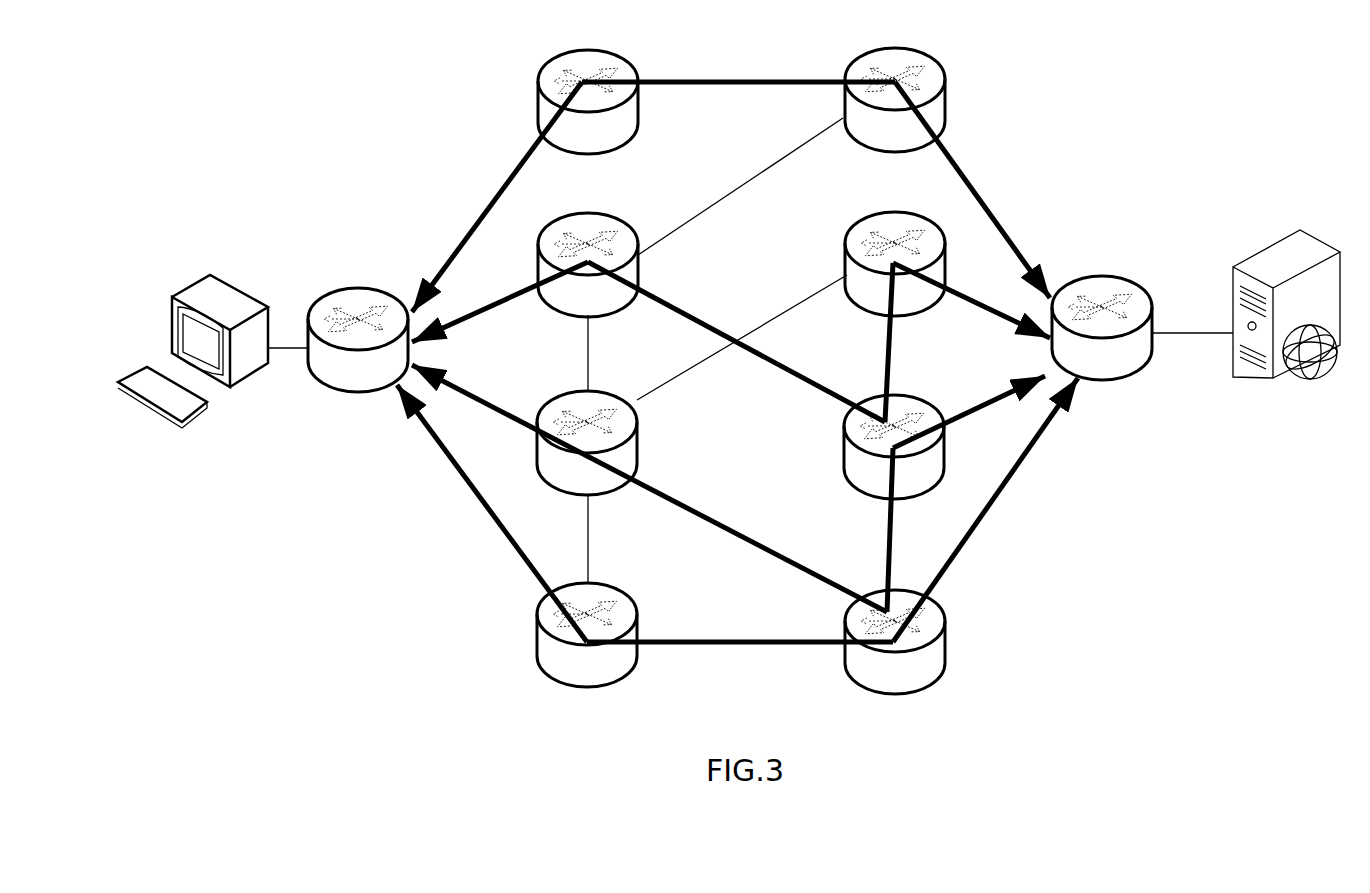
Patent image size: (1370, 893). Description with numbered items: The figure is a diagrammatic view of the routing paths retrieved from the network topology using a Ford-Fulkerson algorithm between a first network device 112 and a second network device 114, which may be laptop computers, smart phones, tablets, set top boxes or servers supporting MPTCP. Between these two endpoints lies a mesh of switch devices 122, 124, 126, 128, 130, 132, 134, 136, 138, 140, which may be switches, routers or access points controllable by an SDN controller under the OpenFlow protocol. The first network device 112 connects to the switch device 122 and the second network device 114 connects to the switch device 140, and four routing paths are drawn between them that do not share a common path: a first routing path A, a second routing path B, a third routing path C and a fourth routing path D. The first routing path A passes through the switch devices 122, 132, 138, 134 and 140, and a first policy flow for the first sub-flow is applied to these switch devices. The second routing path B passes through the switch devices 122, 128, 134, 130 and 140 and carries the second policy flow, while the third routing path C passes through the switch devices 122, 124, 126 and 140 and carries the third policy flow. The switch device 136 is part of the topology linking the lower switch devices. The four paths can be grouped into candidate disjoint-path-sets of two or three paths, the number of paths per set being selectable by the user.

The first network device 112 is at (210, 275).
The second network device 114 is at (1258, 248).
The switch device 122 is at (358, 340).
The switch device 124 is at (588, 102).
The switch device 126 is at (895, 100).
The switch device 128 is at (588, 265).
The switch device 130 is at (895, 264).
The switch device 132 is at (587, 443).
The switch device 134 is at (894, 447).
The switch device 136 is at (587, 635).
The switch device 138 is at (895, 642).
The switch device 140 is at (1102, 328).
The first routing path A is at (992, 403).
The second routing path B is at (977, 307).
The third routing path C is at (950, 155).
The fourth routing path D is at (987, 513).